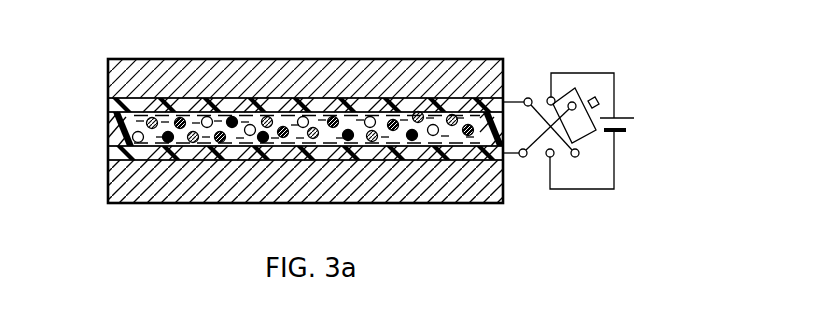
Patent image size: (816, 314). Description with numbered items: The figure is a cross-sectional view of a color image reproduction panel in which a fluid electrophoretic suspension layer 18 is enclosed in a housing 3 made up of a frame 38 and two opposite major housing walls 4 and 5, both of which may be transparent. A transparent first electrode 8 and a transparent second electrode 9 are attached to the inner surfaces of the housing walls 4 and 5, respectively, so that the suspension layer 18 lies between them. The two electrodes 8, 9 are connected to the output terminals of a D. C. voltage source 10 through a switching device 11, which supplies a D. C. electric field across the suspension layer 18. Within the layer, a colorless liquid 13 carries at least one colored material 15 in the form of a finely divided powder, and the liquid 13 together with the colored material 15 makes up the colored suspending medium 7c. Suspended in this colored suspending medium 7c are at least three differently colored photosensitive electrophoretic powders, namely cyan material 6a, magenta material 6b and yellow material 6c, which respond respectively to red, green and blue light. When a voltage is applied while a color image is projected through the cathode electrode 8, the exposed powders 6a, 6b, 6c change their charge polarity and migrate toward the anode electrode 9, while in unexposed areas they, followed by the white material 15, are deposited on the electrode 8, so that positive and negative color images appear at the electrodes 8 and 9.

The housing 3 is at (296, 127).
The major housing wall 4 is at (106, 56).
The first electrode 8 is at (110, 100).
The frame 38 is at (112, 125).
The second electrode 9 is at (110, 152).
The major housing wall 5 is at (110, 182).
The cyan material 6a is at (140, 143).
The colored material 15 is at (170, 143).
The magenta material 6b is at (195, 143).
The yellow material 6c is at (222, 143).
The colorless liquid 13 is at (288, 138).
The colored suspending medium 7c is at (336, 128).
The electrophoretic suspension layer 18 is at (395, 131).
The switching device 11 is at (527, 97).
The D. C. voltage source 10 is at (627, 116).